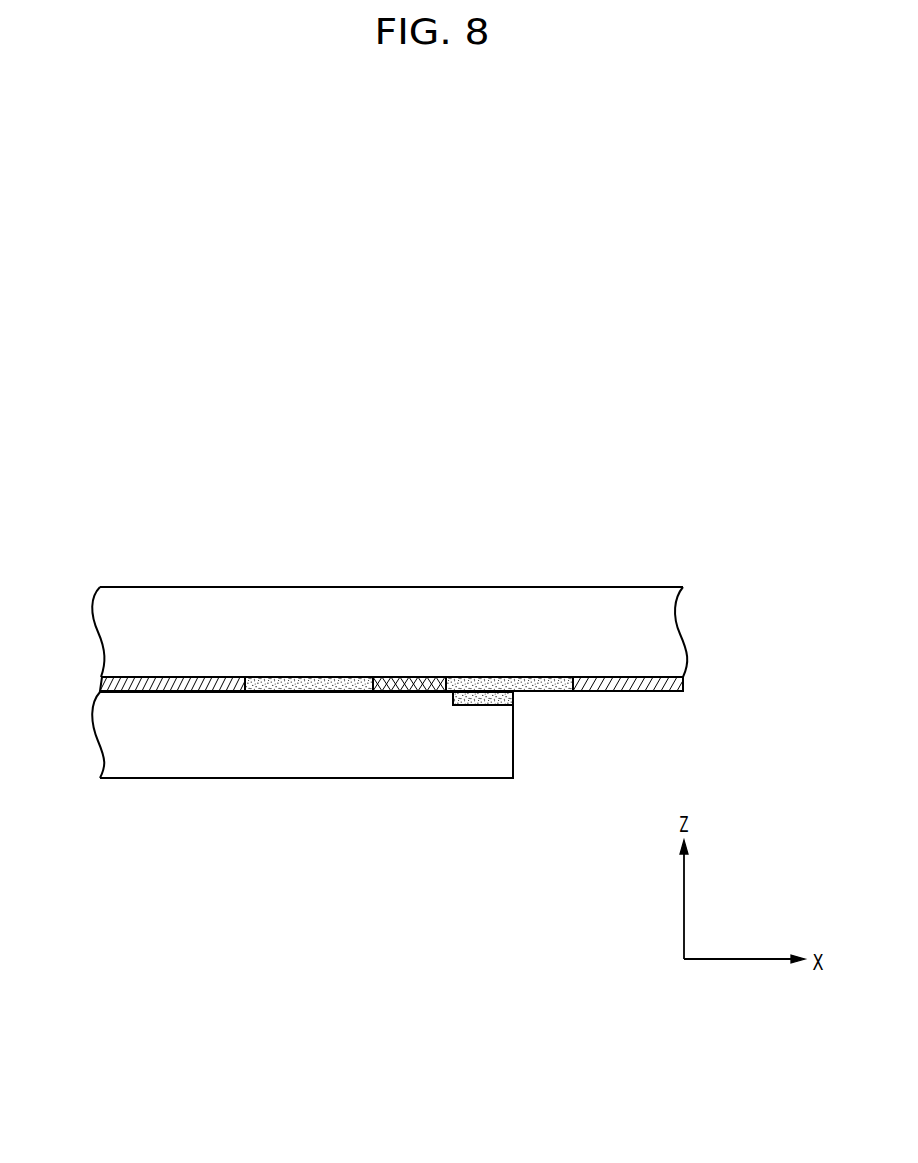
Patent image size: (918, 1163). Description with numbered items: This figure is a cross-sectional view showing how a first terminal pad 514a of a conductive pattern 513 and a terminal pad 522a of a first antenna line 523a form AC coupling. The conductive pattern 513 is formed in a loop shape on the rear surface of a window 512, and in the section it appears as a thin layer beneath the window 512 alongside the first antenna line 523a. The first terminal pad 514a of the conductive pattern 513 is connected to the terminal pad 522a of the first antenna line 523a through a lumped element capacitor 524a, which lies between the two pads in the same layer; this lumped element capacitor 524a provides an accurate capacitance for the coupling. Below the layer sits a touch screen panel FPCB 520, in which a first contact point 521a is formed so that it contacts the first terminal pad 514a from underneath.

The window 512 is at (90, 590).
The conductive pattern 513 is at (637, 683).
The first terminal pad 514a is at (538, 678).
The touch screen panel FPCB 520 is at (90, 692).
The first contact point 521a is at (507, 704).
The terminal pad 522a is at (363, 680).
The first antenna line 523a is at (125, 677).
The lumped element capacitor 524a is at (425, 678).